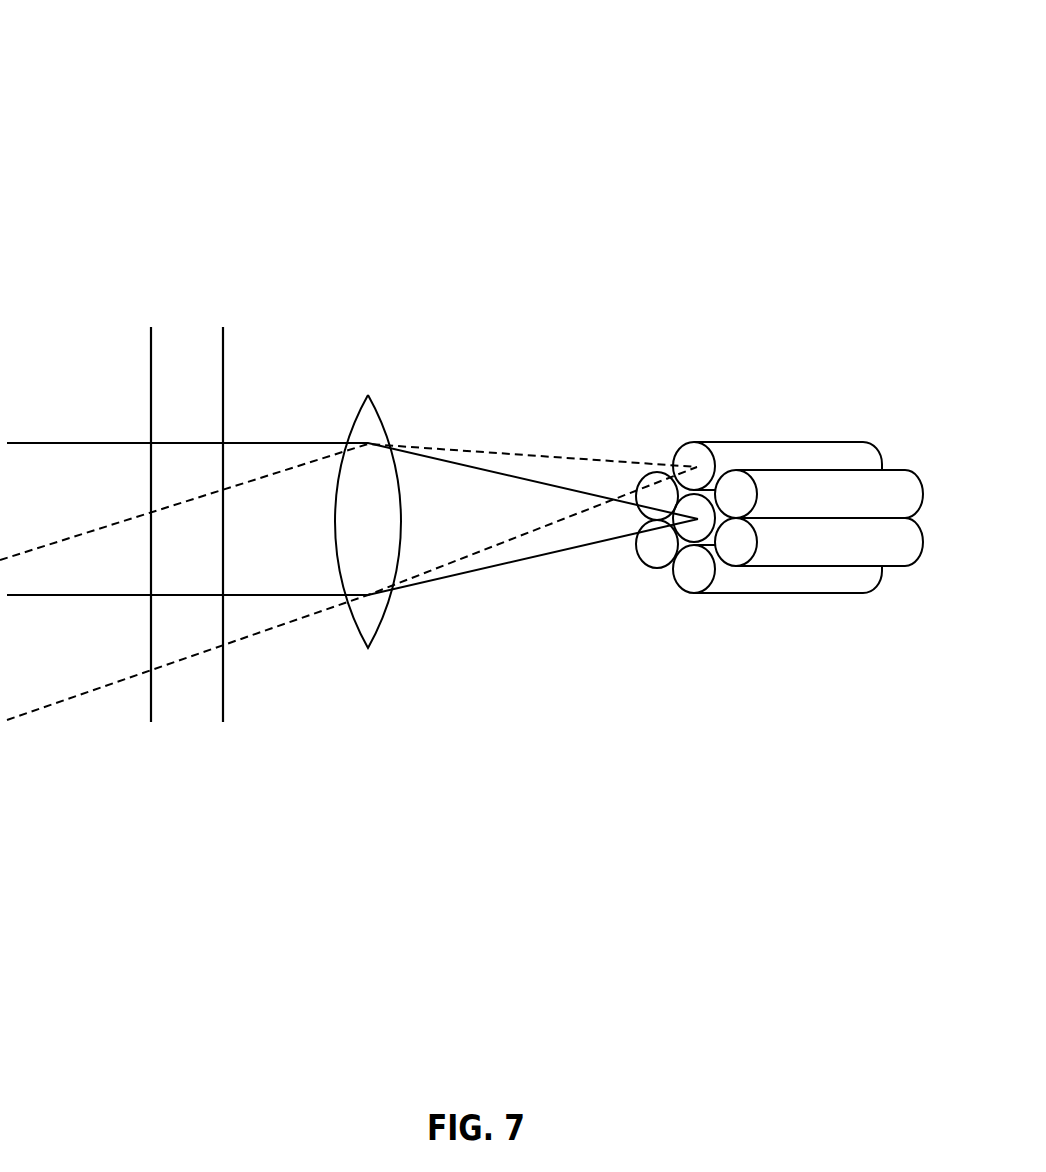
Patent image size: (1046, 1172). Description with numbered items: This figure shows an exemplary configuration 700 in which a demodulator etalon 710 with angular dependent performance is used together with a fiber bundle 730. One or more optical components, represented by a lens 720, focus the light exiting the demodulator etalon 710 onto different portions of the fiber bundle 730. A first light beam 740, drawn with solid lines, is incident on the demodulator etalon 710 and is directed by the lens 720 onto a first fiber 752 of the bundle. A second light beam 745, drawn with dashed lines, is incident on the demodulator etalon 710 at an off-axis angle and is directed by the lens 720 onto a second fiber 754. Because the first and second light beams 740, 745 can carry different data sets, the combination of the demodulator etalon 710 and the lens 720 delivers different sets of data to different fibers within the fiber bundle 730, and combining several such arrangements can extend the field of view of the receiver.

The optical system 700 is at (192, 96).
The demodulator etalon 710 is at (224, 348).
The lens 720 is at (371, 401).
The fiber bundle 730 is at (739, 603).
The first light beam 740 is at (84, 441).
The second light beam 745 is at (66, 709).
The first fiber 752 is at (703, 517).
The second fiber 754 is at (717, 442).